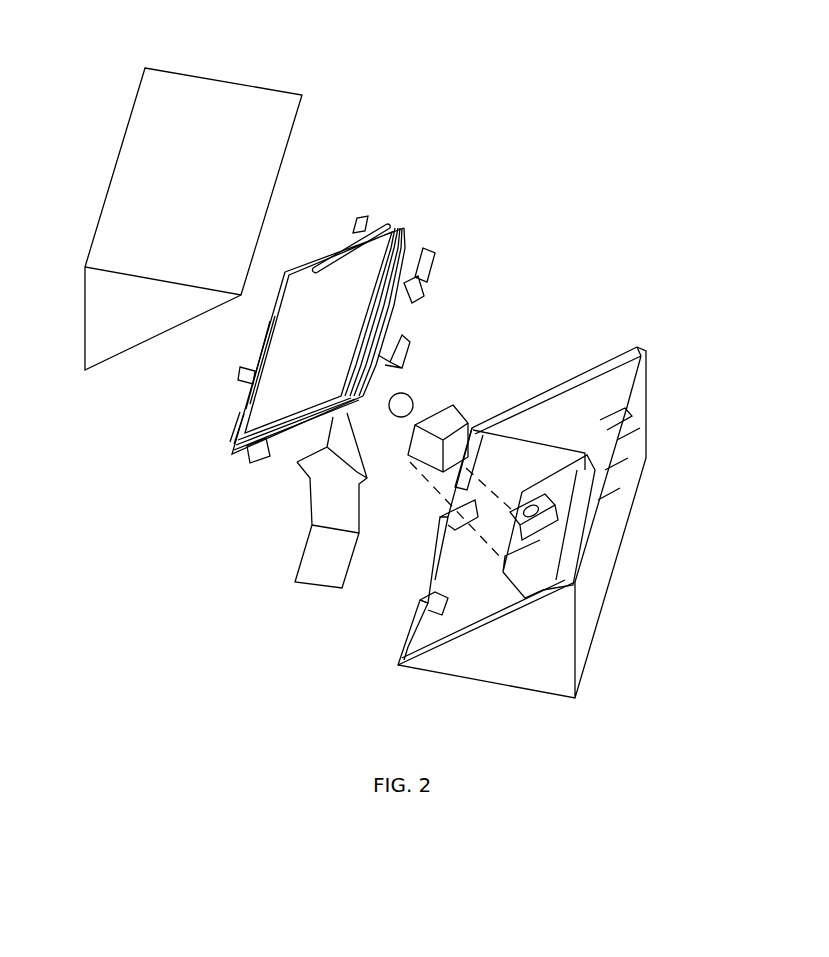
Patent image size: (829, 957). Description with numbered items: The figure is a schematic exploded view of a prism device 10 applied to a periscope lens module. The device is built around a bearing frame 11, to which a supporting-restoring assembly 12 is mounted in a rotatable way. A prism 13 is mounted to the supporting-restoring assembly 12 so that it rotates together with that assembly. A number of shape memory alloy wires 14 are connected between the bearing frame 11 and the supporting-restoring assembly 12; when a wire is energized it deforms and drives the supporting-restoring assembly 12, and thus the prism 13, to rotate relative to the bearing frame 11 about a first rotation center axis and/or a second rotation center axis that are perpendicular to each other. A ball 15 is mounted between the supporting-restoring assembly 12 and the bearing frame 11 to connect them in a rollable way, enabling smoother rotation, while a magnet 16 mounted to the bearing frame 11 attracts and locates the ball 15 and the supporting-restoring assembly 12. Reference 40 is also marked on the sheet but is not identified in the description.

The prism device 10 is at (456, 49).
The bearing frame 11 is at (628, 473).
The supporting-restoring assembly 12 is at (358, 260).
The prism 13 is at (243, 158).
The shape memory alloy wires 14 is at (418, 305).
The ball 15 is at (403, 400).
The magnet 16 is at (457, 417).
The electronic device 40 is at (714, 212).